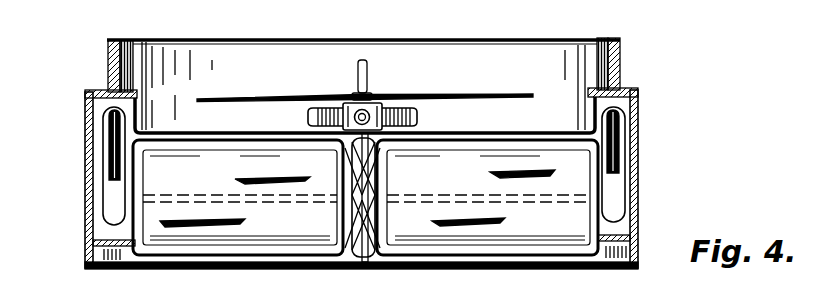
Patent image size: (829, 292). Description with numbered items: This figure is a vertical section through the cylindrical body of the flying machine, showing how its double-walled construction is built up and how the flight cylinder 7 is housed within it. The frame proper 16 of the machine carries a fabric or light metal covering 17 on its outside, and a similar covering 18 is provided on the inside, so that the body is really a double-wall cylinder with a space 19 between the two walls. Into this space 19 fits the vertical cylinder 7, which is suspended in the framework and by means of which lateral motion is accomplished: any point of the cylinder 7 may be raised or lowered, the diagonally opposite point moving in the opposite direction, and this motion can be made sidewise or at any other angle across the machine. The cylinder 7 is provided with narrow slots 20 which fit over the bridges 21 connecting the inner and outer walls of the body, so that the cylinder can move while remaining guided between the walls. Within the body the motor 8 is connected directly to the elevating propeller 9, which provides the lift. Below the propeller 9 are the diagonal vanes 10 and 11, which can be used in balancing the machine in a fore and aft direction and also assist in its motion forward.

The vertical cylinder 7 is at (523, 53).
The motor 8 is at (417, 118).
The elevating propeller 9 is at (480, 95).
The diagonal vane 10 is at (238, 197).
The diagonal vane 11 is at (487, 197).
The frame proper 16 is at (100, 166).
The covering 17 is at (638, 117).
The inner covering 18 is at (138, 120).
The space 19 is at (113, 198).
The narrow slots 20 is at (108, 63).
The bridges 21 is at (88, 92).